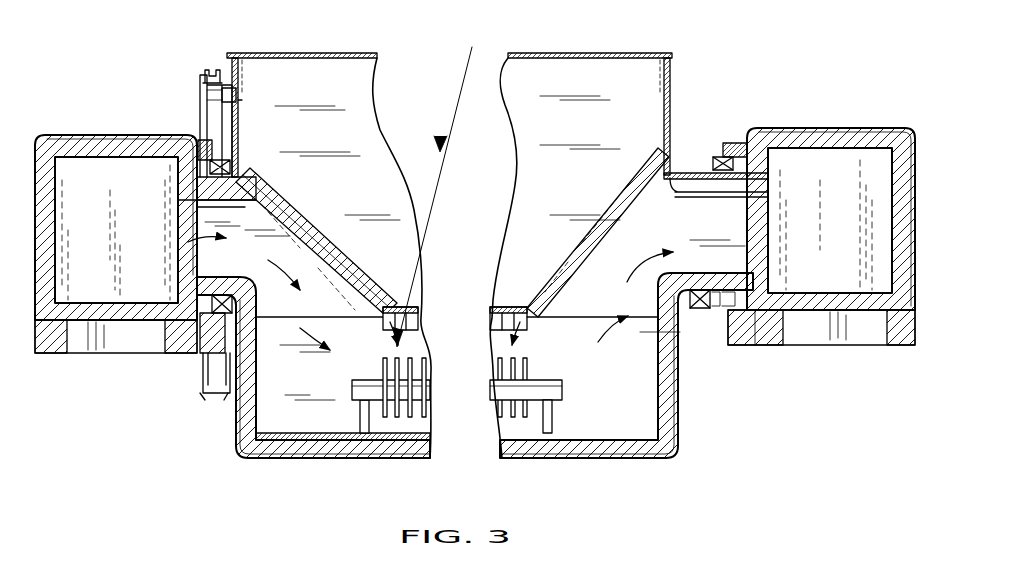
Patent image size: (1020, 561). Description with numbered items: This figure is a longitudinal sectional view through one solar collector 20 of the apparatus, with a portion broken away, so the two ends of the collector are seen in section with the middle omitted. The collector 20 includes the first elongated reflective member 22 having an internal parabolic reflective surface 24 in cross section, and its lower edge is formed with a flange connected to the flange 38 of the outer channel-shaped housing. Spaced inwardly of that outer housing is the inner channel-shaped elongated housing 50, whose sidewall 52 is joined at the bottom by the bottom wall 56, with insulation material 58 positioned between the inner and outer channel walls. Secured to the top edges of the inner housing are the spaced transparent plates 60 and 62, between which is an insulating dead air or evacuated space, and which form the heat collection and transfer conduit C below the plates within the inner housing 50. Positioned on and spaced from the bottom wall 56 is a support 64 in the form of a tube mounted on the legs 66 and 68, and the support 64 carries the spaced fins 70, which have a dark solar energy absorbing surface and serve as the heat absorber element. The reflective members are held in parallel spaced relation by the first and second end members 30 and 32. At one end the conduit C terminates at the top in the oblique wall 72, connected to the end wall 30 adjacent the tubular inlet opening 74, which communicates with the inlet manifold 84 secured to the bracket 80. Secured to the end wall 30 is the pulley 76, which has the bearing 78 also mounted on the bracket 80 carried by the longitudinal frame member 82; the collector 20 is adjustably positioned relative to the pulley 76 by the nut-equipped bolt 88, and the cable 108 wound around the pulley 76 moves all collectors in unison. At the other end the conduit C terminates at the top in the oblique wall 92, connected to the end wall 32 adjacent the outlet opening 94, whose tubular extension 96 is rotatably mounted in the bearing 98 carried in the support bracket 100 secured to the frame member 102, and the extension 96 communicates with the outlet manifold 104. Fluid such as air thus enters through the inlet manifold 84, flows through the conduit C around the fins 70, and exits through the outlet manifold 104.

The collector 20 is at (222, 472).
The first elongated reflective member 22 is at (323, 149).
The internal parabolic reflective surface 24 is at (343, 98).
The first end member 30 is at (238, 97).
The second end member 32 is at (672, 95).
The flange 38 is at (393, 306).
The inner channel-shaped elongated housing 50 is at (316, 303).
The sidewall 52 is at (280, 385).
The bottom wall 56 is at (612, 444).
The insulation material 58 is at (280, 447).
The transparent plate 60 is at (490, 319).
The transparent plate 62 is at (394, 333).
The support 64 is at (352, 388).
The leg 66 is at (362, 424).
The leg 68 is at (552, 417).
The fins 70 is at (383, 365).
The oblique wall 72 is at (290, 210).
The tubular inlet opening 74 is at (200, 204).
The pulley 76 is at (203, 80).
The bearing 78 is at (200, 186).
The bracket 80 is at (210, 158).
The longitudinal frame member 82 is at (178, 350).
The inlet manifold 84 is at (70, 135).
The nut-equipped bolt 88 is at (222, 94).
The oblique wall 92 is at (625, 192).
The outlet opening 94 is at (676, 194).
The tubular extension 96 is at (700, 295).
The bearing 98 is at (725, 310).
The support bracket 100 is at (737, 330).
The frame member 102 is at (774, 330).
The outlet manifold 104 is at (858, 128).
The cable 108 is at (213, 70).
The heat collection and transfer conduit C is at (490, 345).